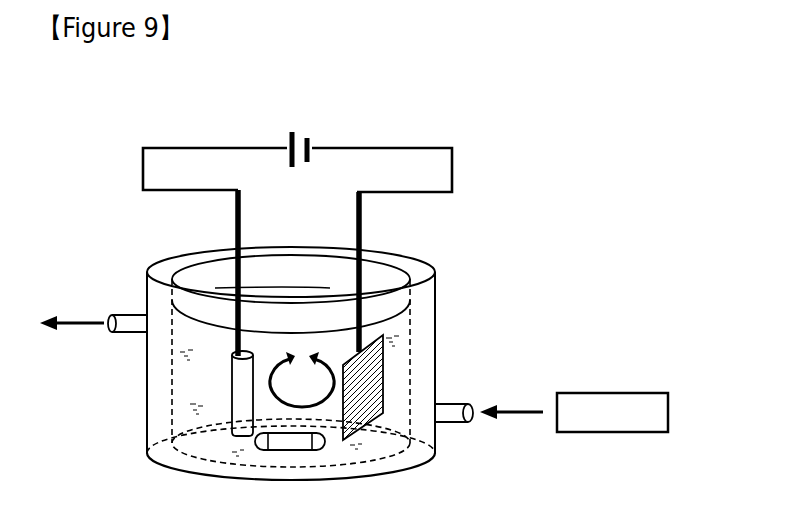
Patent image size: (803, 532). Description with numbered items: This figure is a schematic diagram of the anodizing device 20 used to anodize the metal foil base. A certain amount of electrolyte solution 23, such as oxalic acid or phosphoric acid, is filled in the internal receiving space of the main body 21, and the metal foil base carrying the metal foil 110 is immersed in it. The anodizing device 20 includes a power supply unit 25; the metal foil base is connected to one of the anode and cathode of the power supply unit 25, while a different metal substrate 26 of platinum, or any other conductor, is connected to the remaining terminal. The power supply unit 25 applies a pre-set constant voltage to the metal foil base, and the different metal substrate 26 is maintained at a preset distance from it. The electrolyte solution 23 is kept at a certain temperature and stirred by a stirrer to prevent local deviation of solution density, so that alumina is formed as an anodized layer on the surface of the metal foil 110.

The anodizing device 20 is at (354, 303).
The main body 21 is at (427, 279).
The power supply unit 25 is at (313, 129).
The metal foil 110 is at (212, 442).
The electrolyte solution 23 is at (292, 462).
The different metal substrate 26 is at (378, 422).